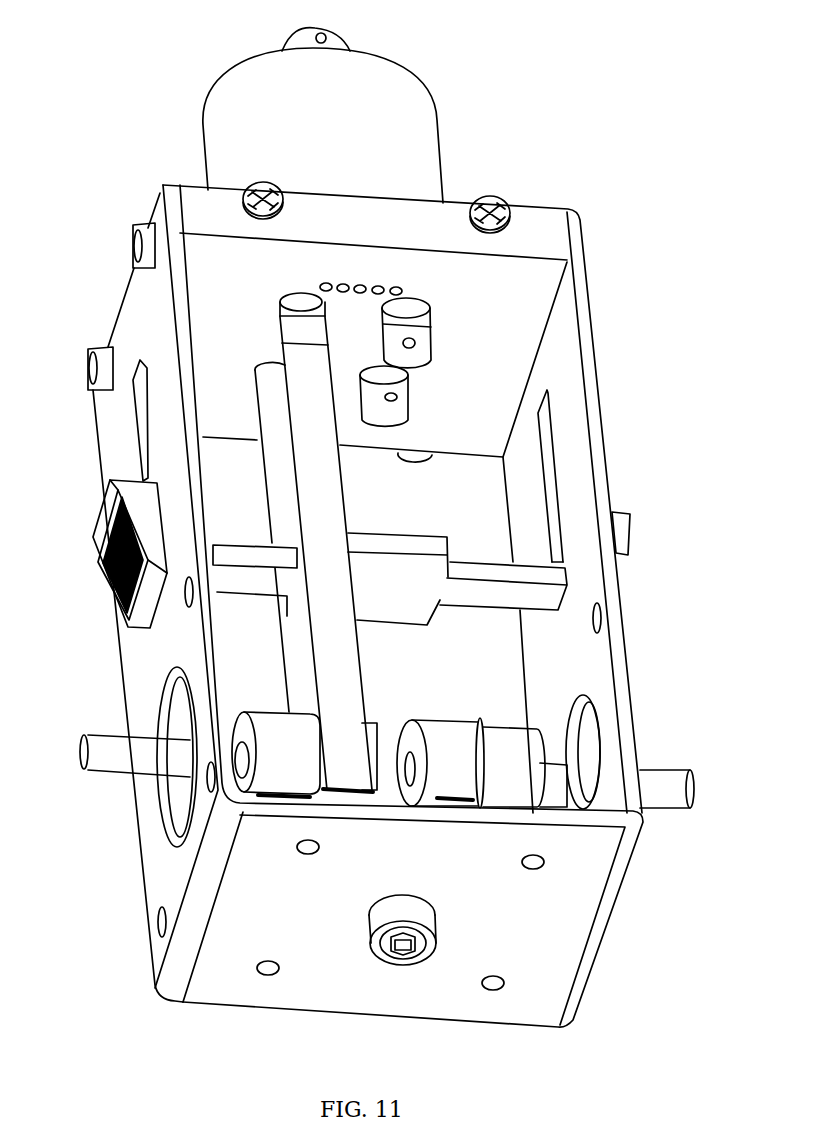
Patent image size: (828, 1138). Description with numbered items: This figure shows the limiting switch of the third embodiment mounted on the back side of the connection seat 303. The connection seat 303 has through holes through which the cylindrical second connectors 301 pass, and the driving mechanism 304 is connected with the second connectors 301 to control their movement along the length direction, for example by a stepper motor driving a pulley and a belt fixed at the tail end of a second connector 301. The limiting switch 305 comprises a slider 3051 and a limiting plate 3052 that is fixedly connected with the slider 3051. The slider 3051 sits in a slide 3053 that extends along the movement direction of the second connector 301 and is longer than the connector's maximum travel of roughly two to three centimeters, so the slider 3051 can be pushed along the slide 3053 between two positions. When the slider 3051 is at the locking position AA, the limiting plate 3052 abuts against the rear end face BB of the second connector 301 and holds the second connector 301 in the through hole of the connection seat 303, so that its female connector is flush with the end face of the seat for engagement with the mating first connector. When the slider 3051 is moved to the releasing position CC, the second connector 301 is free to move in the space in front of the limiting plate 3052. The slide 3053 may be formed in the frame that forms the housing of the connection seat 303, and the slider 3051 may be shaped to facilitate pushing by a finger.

The second connector 301 is at (280, 300).
The connection seat 303 is at (420, 136).
The driving mechanism 304 is at (178, 757).
The limiting switch 305 is at (630, 513).
The slider 3051 is at (110, 627).
The limiting plate 3052 is at (413, 595).
The slide 3053 is at (143, 433).
The locking position AA is at (550, 393).
The rear end face of the second connector BB is at (423, 357).
The releasing position CC is at (570, 577).